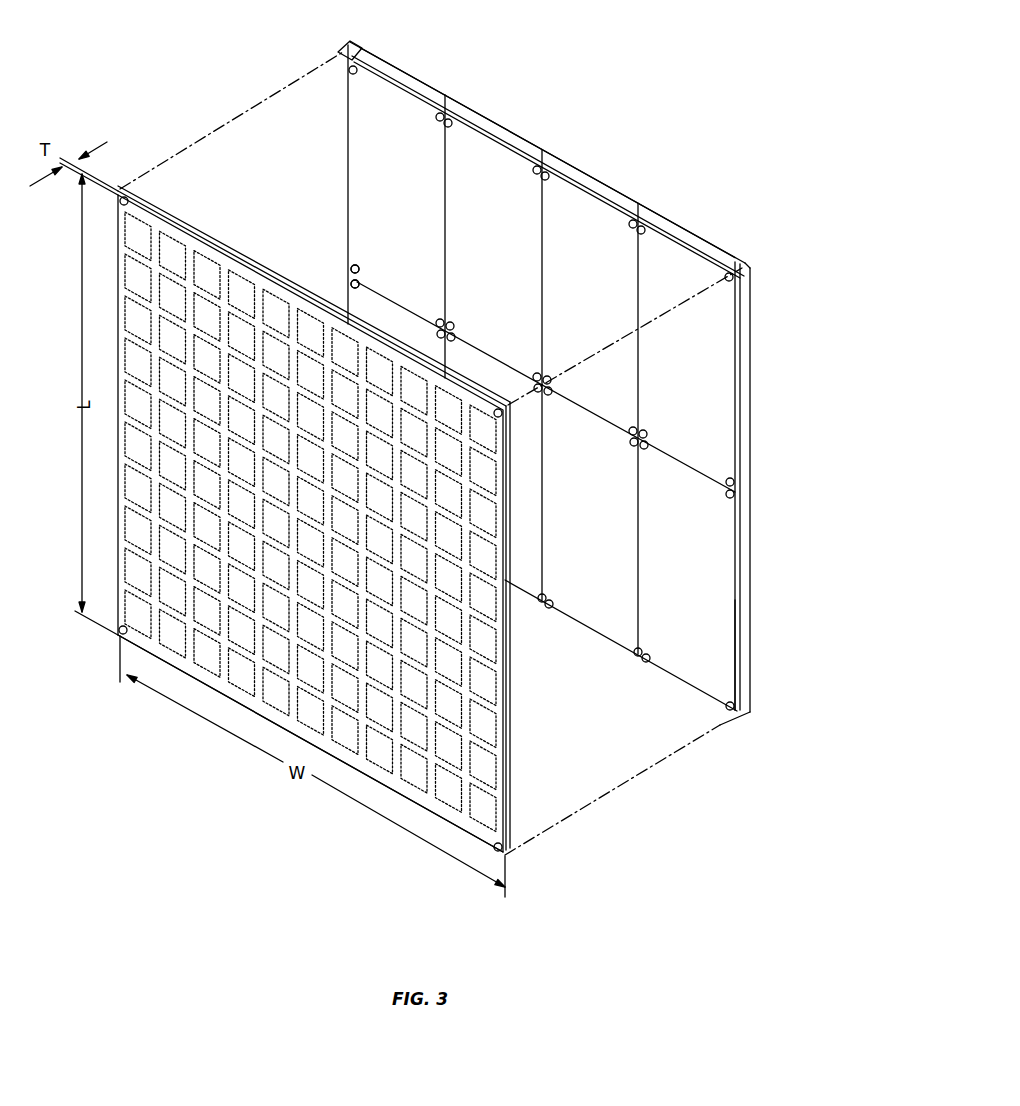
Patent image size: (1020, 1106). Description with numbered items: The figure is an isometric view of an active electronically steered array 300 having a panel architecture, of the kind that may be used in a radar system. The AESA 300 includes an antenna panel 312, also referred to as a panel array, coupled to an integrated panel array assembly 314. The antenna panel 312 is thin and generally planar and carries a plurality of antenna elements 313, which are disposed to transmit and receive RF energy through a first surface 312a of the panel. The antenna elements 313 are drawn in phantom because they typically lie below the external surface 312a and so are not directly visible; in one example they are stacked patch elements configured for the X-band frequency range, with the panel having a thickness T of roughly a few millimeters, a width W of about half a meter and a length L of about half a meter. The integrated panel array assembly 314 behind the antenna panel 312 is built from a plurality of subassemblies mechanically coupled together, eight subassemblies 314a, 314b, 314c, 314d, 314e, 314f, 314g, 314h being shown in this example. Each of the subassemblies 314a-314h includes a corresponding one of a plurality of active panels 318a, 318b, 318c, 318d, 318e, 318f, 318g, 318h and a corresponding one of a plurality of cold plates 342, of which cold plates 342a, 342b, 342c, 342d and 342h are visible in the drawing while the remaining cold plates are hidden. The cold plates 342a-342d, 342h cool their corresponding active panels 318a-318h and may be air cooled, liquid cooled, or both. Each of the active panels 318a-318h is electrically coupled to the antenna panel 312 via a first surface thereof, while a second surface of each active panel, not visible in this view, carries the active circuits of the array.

The active electronically steered array 300 is at (605, 88).
The antenna panel 312 is at (150, 200).
The first surface 312a is at (373, 780).
The antenna elements 313 is at (187, 642).
The integrated panel array assembly 314 is at (352, 44).
The subassembly 314a is at (398, 98).
The subassembly 314b is at (495, 152).
The subassembly 314c is at (595, 208).
The subassembly 314d is at (687, 258).
The subassembly 314e is at (350, 270).
The subassembly 314f is at (518, 590).
The subassembly 314g is at (607, 643).
The subassembly 314h is at (743, 652).
The active panel 318a is at (338, 58).
The active panel 318b is at (474, 321).
The active panel 318c is at (575, 380).
The active panel 318d is at (669, 433).
The active panel 318e is at (438, 326).
The active panel 318f is at (534, 382).
The active panel 318g is at (606, 436).
The active panel 318h is at (697, 487).
The cold plates 342 is at (733, 255).
The cold plate 342a is at (410, 85).
The cold plate 342b is at (493, 127).
The cold plate 342c is at (592, 183).
The cold plate 342d is at (667, 232).
The cold plate 342h is at (743, 578).